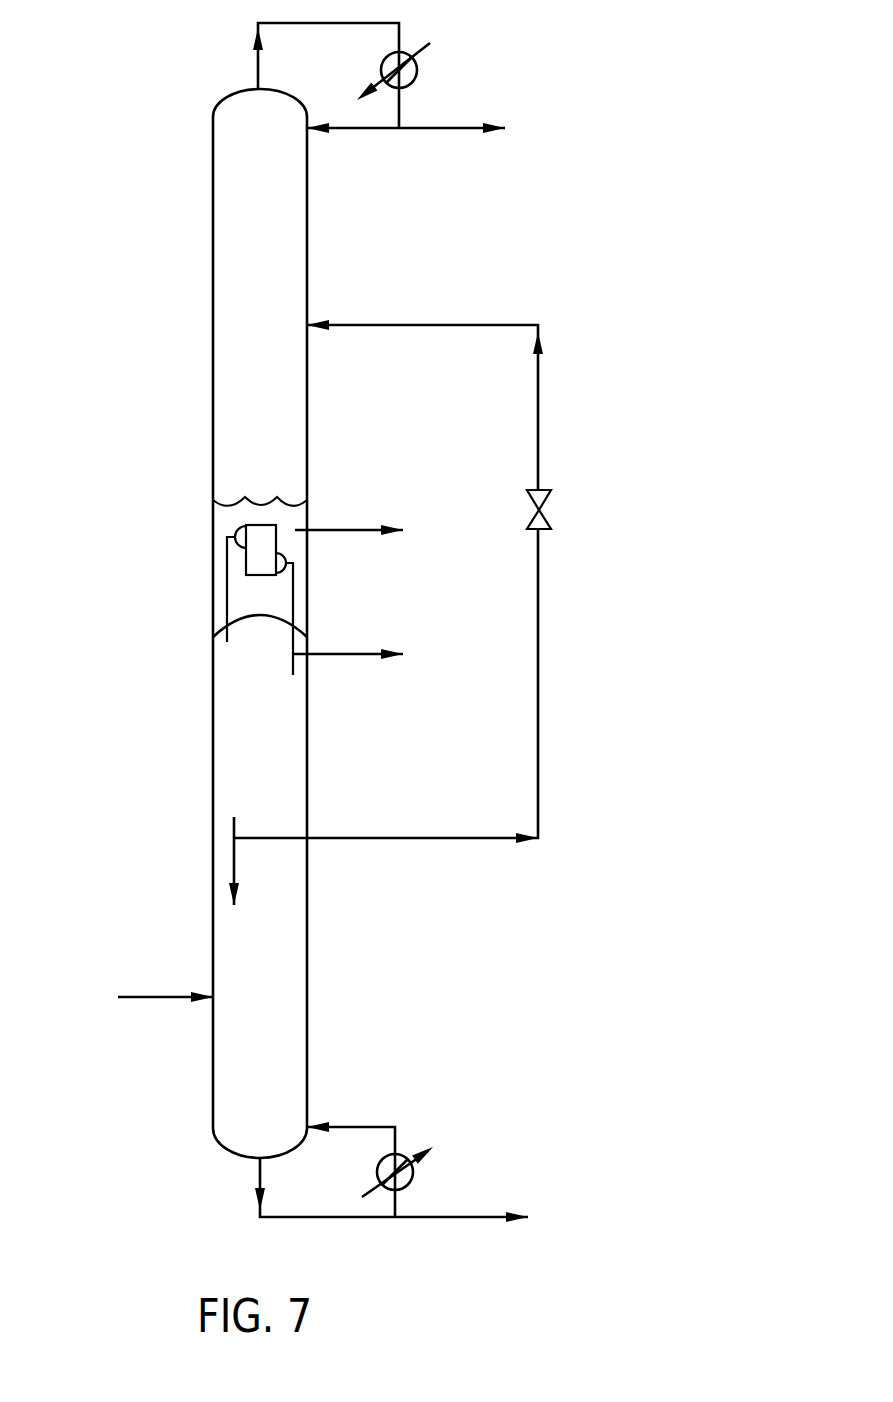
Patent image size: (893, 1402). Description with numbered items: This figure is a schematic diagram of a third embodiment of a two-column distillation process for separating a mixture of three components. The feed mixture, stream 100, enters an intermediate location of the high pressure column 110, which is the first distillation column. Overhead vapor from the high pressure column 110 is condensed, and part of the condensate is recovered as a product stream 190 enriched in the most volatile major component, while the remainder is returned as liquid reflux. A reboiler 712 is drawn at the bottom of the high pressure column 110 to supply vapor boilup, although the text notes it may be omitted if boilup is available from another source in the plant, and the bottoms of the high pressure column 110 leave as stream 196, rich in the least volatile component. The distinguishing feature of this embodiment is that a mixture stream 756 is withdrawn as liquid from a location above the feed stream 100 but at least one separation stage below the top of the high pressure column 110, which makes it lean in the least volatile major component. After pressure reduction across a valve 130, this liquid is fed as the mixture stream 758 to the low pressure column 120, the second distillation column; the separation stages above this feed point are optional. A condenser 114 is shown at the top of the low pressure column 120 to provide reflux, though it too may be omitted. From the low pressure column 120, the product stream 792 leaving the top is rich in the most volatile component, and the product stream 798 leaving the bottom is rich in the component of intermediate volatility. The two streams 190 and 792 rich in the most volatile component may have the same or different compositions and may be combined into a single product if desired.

The feed stream 100 is at (155, 998).
The high pressure column 110 is at (308, 1033).
The low pressure column 120 is at (214, 260).
The condenser 114 is at (414, 48).
The product stream 792 is at (438, 128).
The mixture stream feed 758 is at (484, 325).
The valve 130 is at (545, 502).
The product stream 798 is at (340, 530).
The product stream 190 is at (340, 654).
The mixture stream 756 is at (355, 838).
The reboiler 712 is at (415, 1147).
The bottoms product line C 196 is at (440, 1217).